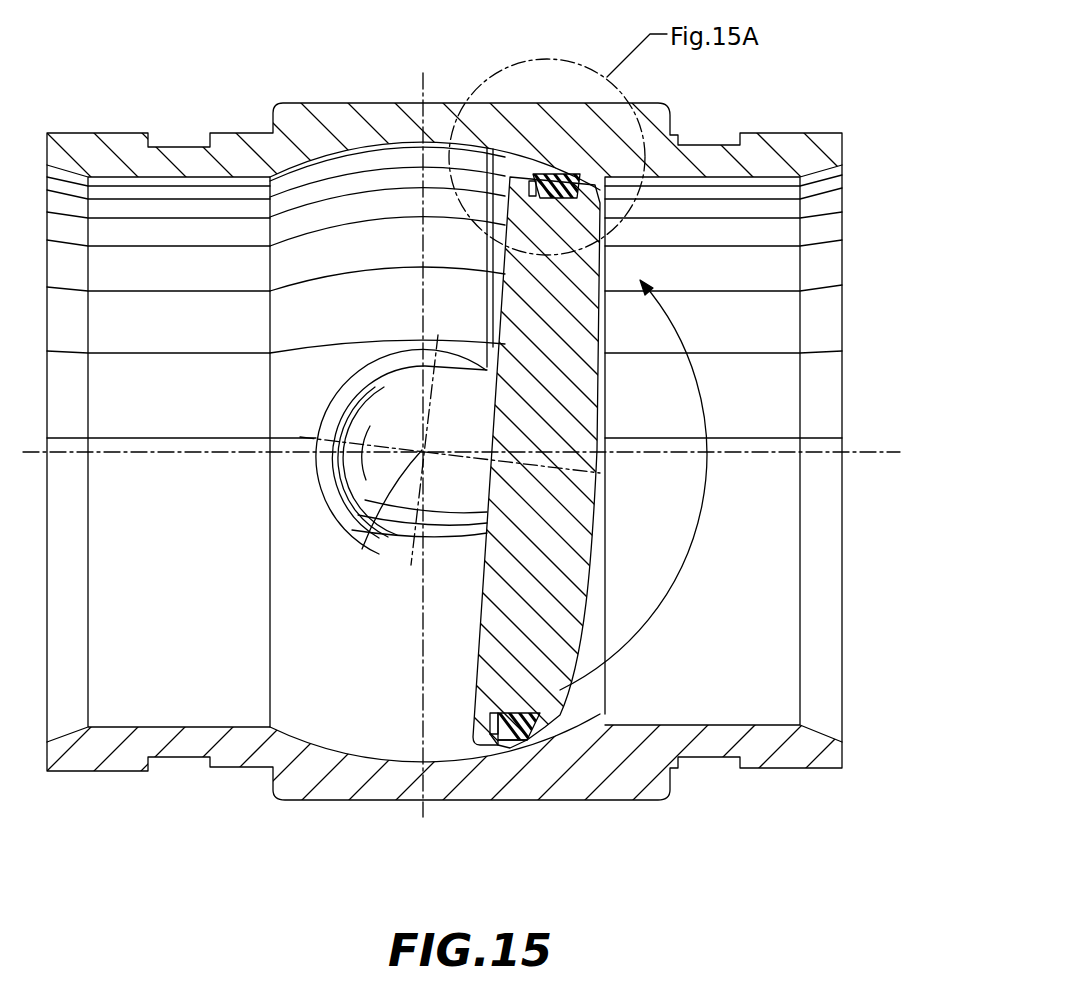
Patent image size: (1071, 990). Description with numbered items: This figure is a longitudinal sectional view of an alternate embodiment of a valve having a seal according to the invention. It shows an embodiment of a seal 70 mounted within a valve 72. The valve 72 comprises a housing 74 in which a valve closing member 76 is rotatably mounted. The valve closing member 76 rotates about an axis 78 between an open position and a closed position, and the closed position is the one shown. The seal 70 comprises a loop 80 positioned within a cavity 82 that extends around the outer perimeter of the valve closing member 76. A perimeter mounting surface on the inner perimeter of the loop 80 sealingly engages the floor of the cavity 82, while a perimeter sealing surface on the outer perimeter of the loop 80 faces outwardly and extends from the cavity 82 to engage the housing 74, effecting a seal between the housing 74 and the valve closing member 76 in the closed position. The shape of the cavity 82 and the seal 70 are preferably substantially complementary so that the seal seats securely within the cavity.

The seal 70 is at (517, 742).
The valve 72 is at (176, 89).
The housing 74 is at (330, 793).
The valve closing member 76 is at (490, 608).
The axis 78 is at (362, 549).
The loop 80 is at (510, 713).
The cavity 82 is at (490, 720).